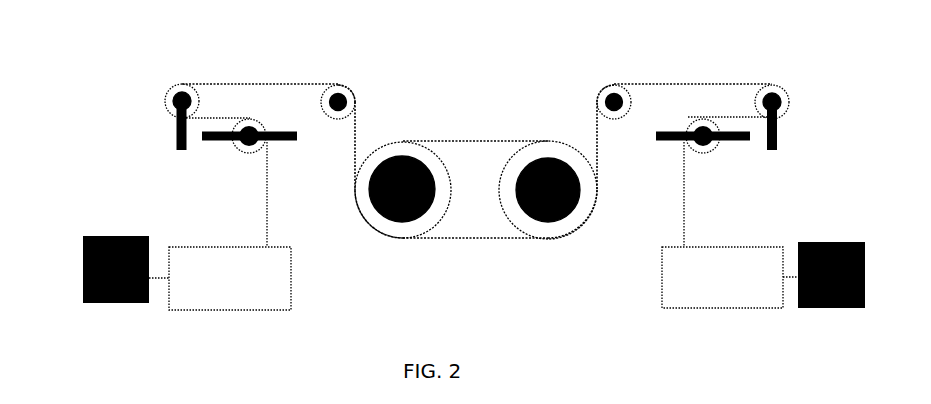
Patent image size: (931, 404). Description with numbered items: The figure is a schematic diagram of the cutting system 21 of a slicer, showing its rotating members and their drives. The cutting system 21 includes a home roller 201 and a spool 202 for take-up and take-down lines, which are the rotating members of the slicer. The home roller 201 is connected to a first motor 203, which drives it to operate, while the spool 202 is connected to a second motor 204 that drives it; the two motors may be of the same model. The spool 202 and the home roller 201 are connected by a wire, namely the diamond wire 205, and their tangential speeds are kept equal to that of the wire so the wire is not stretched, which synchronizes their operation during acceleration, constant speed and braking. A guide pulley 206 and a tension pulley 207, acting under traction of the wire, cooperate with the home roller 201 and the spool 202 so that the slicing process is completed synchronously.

The cutting system 21 is at (44, 74).
The home roller 201 is at (380, 148).
The spool for take-up and take-down lines 202 is at (176, 247).
The first motor 203 is at (435, 185).
The second motor 204 is at (100, 236).
The diamond wire 205 is at (472, 138).
The guide pulley 206 is at (345, 92).
The tension pulley 207 is at (170, 92).